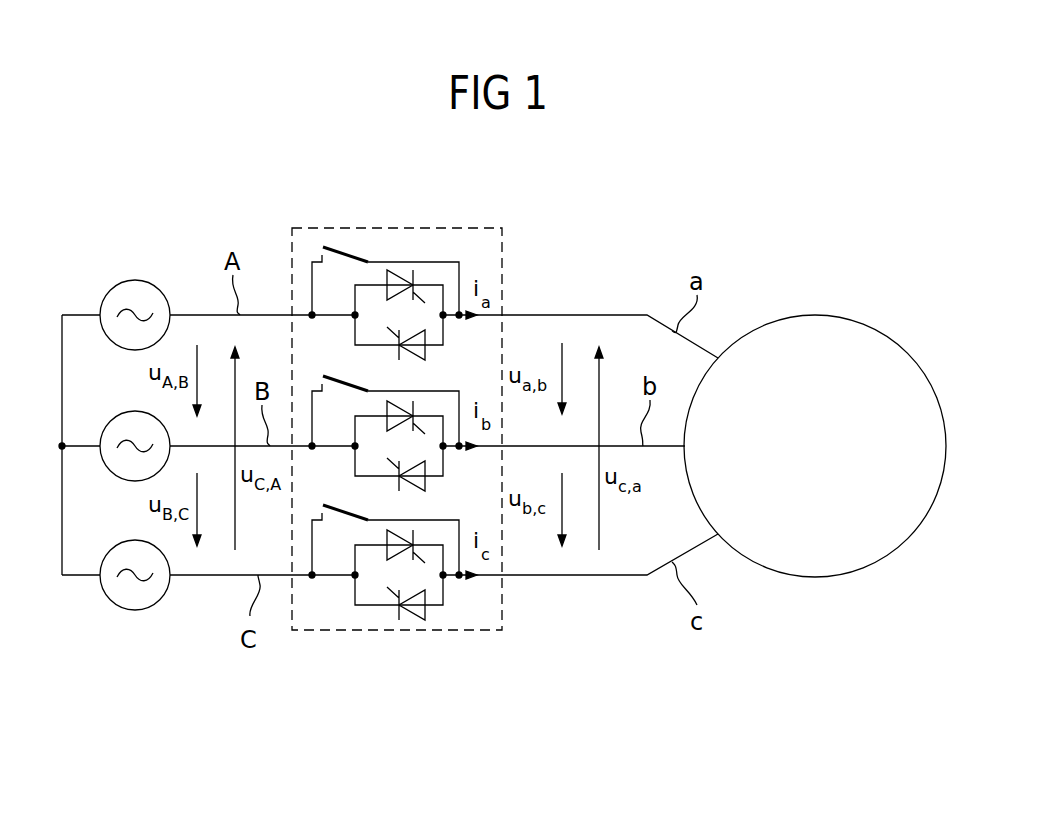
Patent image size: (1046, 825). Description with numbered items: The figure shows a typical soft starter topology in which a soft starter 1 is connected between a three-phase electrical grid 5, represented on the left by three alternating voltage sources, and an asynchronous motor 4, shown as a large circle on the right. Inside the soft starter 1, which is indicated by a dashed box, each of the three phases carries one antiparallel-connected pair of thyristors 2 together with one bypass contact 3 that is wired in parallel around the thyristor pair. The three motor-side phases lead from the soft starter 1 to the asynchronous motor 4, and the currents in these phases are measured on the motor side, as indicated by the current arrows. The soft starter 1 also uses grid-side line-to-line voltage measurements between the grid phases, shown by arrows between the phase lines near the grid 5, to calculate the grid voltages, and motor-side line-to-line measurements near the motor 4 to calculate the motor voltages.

The soft starter 1 is at (312, 228).
The antiparallel-connected pair of thyristors 2 is at (397, 272).
The bypass contact 3 is at (330, 252).
The asynchronous motor 4 is at (866, 330).
The three-phase electrical grid 5 is at (130, 268).